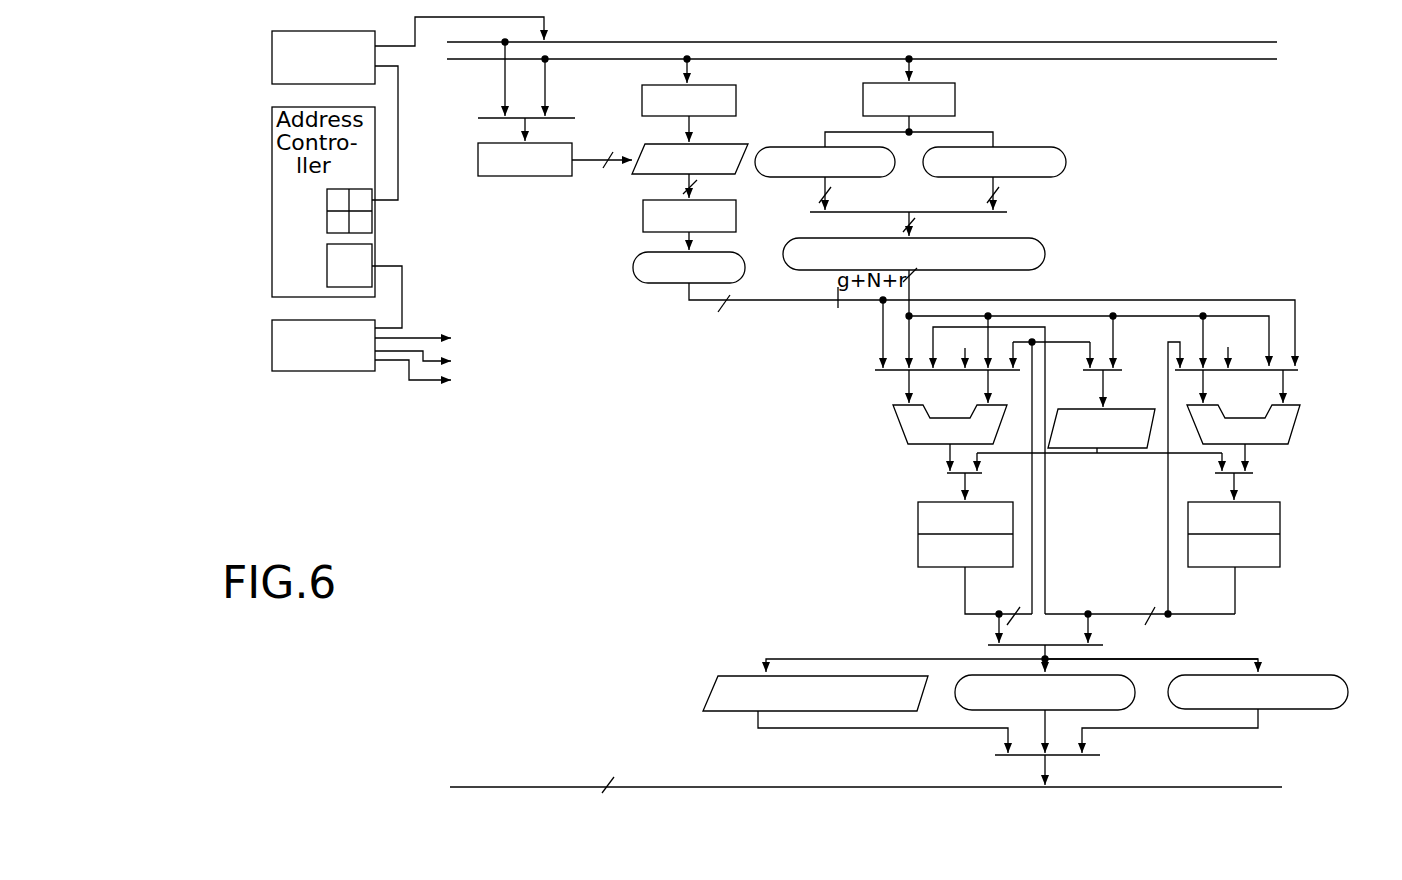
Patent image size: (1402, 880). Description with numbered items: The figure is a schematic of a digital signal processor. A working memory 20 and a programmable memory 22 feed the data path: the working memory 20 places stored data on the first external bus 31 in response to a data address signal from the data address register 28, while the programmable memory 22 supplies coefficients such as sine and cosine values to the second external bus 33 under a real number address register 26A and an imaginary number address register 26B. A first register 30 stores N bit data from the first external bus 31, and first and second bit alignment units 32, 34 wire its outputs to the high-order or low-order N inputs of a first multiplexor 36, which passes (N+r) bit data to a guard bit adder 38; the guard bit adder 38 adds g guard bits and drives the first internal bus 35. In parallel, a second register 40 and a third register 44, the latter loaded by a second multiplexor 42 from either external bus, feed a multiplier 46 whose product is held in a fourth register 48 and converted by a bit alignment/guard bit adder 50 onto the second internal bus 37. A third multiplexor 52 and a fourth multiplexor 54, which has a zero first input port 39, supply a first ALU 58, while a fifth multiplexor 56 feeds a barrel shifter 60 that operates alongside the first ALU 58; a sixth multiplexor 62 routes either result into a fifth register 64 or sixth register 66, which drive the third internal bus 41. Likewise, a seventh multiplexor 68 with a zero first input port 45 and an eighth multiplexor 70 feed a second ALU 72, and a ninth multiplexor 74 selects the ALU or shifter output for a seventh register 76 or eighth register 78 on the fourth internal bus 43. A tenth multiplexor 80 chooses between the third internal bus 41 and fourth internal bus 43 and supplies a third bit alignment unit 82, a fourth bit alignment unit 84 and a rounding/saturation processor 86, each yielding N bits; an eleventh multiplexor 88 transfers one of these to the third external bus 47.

The working memory 20 is at (399, 358).
The programmable memory 22 is at (408, 108).
The real number address register 26A is at (330, 230).
The imaginary number address register 26B is at (372, 222).
The data address register 28 is at (330, 286).
The first register 30 is at (955, 95).
The first external bus 31 is at (1277, 59).
The first bit alignment unit 32 is at (790, 147).
The second external bus 33 is at (1277, 42).
The second bit alignment unit 34 is at (1066, 160).
The first internal bus 35 is at (909, 288).
The first multiplexor 36 is at (1007, 212).
The second internal bus 37 is at (811, 303).
The guard bit adder 38 is at (1045, 254).
The first input port 39 is at (963, 353).
The second register 40 is at (736, 100).
The third internal bus 41 is at (1033, 555).
The second multiplexor 42 is at (558, 118).
The fourth internal bus 43 is at (1047, 505).
The third register 44 is at (572, 143).
The first input port 45 is at (1228, 352).
The multiplier 46 is at (748, 144).
The third external bus 47 is at (1215, 785).
The fourth register 48 is at (736, 214).
The bit alignment/guard bit adder 50 is at (745, 262).
The third multiplexor 52 is at (878, 372).
The fourth multiplexor 54 is at (960, 372).
The fifth multiplexor 56 is at (1083, 372).
The first ALU 58 is at (995, 400).
The barrel shifter 60 is at (1125, 405).
The sixth multiplexor 62 is at (947, 475).
The fifth register 64 is at (1013, 502).
The sixth register 66 is at (1008, 568).
The seventh multiplexor 68 is at (1182, 372).
The eighth multiplexor 70 is at (1298, 372).
The second ALU 72 is at (1300, 402).
The ninth multiplexor 74 is at (1253, 475).
The seventh register 76 is at (1280, 510).
The eighth register 78 is at (1280, 548).
The tenth multiplexor 80 is at (1097, 644).
The third bit alignment unit 82 is at (1135, 692).
The fourth bit alignment unit 84 is at (1348, 692).
The rounding/saturation processor 86 is at (928, 690).
The eleventh multiplexor 88 is at (1100, 757).